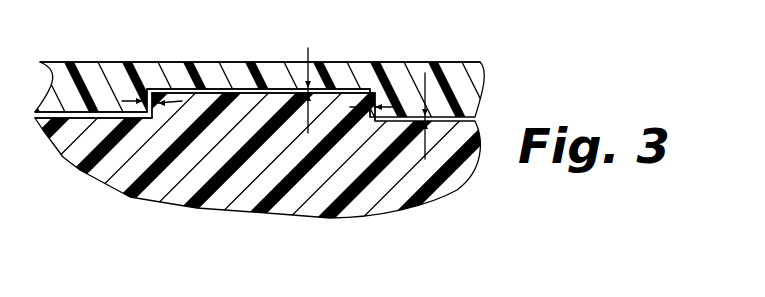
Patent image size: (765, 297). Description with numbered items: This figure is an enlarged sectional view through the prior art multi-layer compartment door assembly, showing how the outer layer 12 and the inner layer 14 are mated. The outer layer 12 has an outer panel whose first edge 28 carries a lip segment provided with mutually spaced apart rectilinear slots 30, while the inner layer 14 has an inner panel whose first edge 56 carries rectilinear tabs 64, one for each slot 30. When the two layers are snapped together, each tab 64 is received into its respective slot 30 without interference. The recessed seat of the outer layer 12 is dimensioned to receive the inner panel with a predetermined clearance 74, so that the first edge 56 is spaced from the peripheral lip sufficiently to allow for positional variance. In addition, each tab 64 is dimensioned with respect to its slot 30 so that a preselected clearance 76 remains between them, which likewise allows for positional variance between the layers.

The outer layer 12 is at (480, 87).
The inner layer 14 is at (463, 190).
The first edge 28 is at (185, 62).
The rectilinear slots 30 is at (227, 93).
The first edge 56 is at (98, 120).
The rectilinear tabs 64 is at (248, 90).
The predetermined clearance 74 is at (425, 113).
The preselected clearance 76 is at (380, 93).